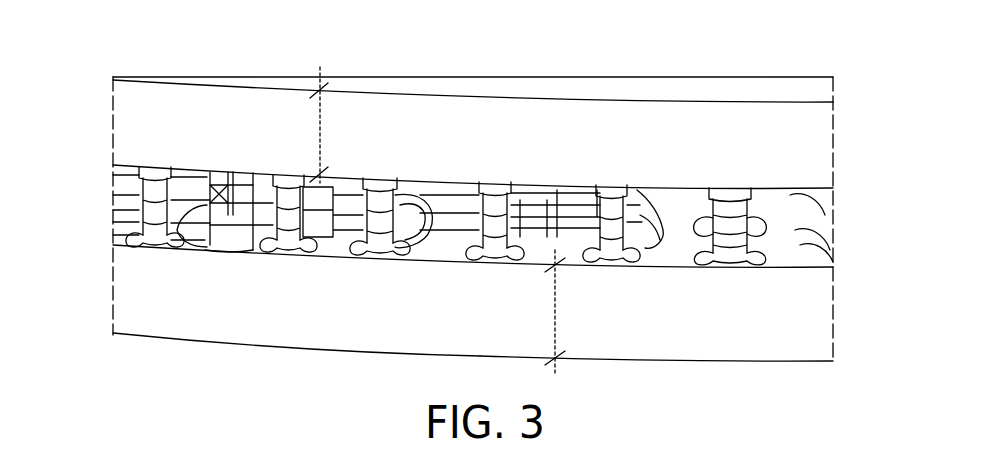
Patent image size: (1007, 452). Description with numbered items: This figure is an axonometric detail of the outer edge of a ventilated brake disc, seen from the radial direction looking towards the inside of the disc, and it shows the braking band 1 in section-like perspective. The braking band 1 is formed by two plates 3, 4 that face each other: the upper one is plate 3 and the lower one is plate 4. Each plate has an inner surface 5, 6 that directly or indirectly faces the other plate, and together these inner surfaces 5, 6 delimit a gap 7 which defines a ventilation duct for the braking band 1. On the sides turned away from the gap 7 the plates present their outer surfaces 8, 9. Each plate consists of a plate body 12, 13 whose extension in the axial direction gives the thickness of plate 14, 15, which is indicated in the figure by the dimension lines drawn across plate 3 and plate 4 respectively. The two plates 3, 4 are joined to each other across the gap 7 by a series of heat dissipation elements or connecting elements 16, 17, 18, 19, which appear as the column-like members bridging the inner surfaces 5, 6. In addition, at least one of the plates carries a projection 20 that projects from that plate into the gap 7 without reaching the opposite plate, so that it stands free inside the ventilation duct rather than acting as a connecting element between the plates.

The braking band 1 is at (700, 140).
The plate 3 is at (585, 140).
The plate 4 is at (660, 326).
The inner surface 5 is at (723, 188).
The inner surface 6 is at (667, 258).
The gap 7 is at (333, 237).
The outer surface 8 is at (643, 86).
The outer surface 9 is at (302, 351).
The plate body 12 is at (462, 148).
The plate body 13 is at (412, 319).
The thickness of plate 14 is at (320, 125).
The thickness of plate 15 is at (556, 312).
The connecting element 16 is at (730, 226).
The connecting element 17 is at (660, 202).
The connecting element 18 is at (265, 217).
The connecting element 19 is at (137, 210).
The projection 20 is at (210, 225).